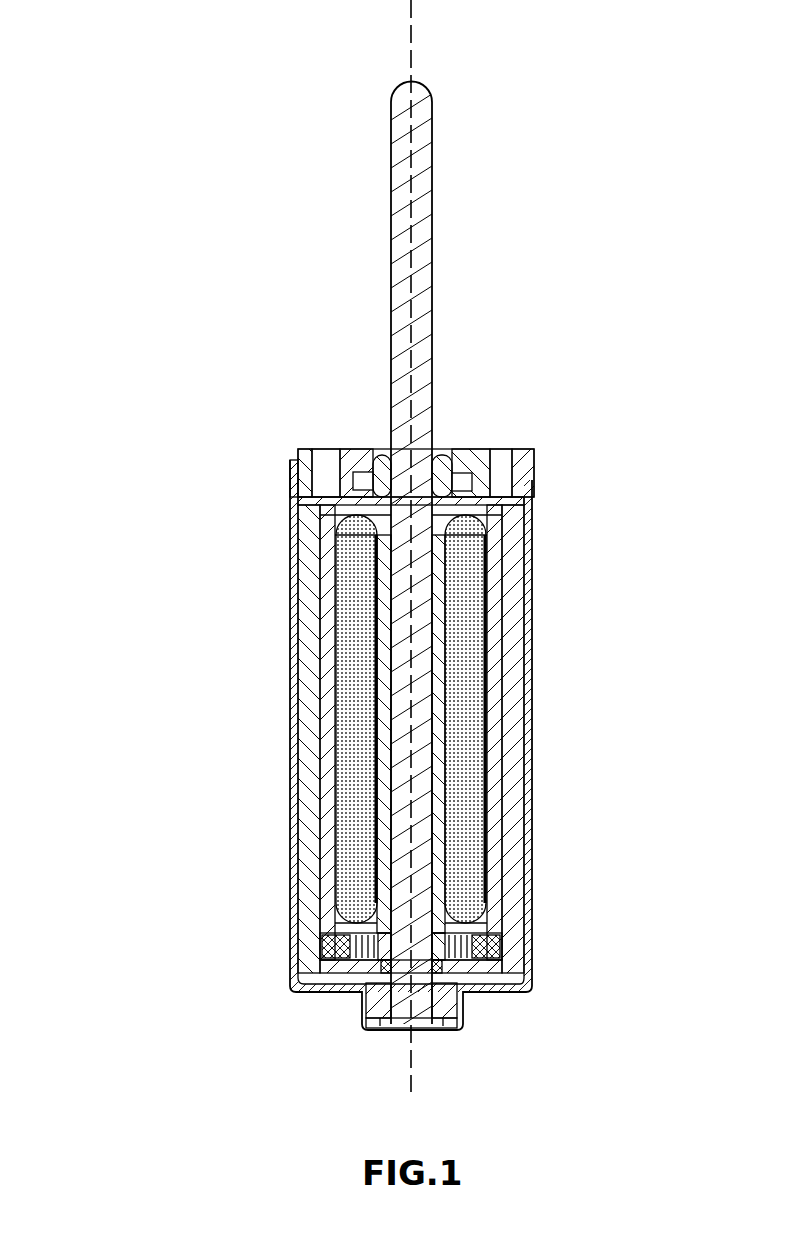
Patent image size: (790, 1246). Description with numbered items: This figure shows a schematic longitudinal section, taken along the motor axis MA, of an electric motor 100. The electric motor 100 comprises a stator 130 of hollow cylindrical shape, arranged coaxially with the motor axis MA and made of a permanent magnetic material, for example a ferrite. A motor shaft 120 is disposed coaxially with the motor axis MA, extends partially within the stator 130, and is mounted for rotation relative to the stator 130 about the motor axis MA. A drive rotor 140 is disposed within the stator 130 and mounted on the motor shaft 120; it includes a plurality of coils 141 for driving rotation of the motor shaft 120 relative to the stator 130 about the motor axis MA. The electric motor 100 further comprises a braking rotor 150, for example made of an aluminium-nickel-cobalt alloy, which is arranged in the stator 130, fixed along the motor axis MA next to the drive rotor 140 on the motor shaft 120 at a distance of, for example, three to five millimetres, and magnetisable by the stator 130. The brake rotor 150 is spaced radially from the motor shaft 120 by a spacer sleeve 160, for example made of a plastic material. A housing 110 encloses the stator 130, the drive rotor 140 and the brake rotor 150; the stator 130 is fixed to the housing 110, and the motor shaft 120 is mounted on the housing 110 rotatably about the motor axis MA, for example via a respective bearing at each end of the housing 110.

The electric motor 100 is at (370, 546).
The housing 110 is at (328, 745).
The motor shaft 120 is at (330, 527).
The stator 130 is at (486, 739).
The drive rotor 140 is at (504, 719).
The coils 141 is at (504, 719).
The braking rotor 150 is at (561, 910).
The spacer sleeve 160 is at (255, 894).
The motor axis MA is at (435, 546).